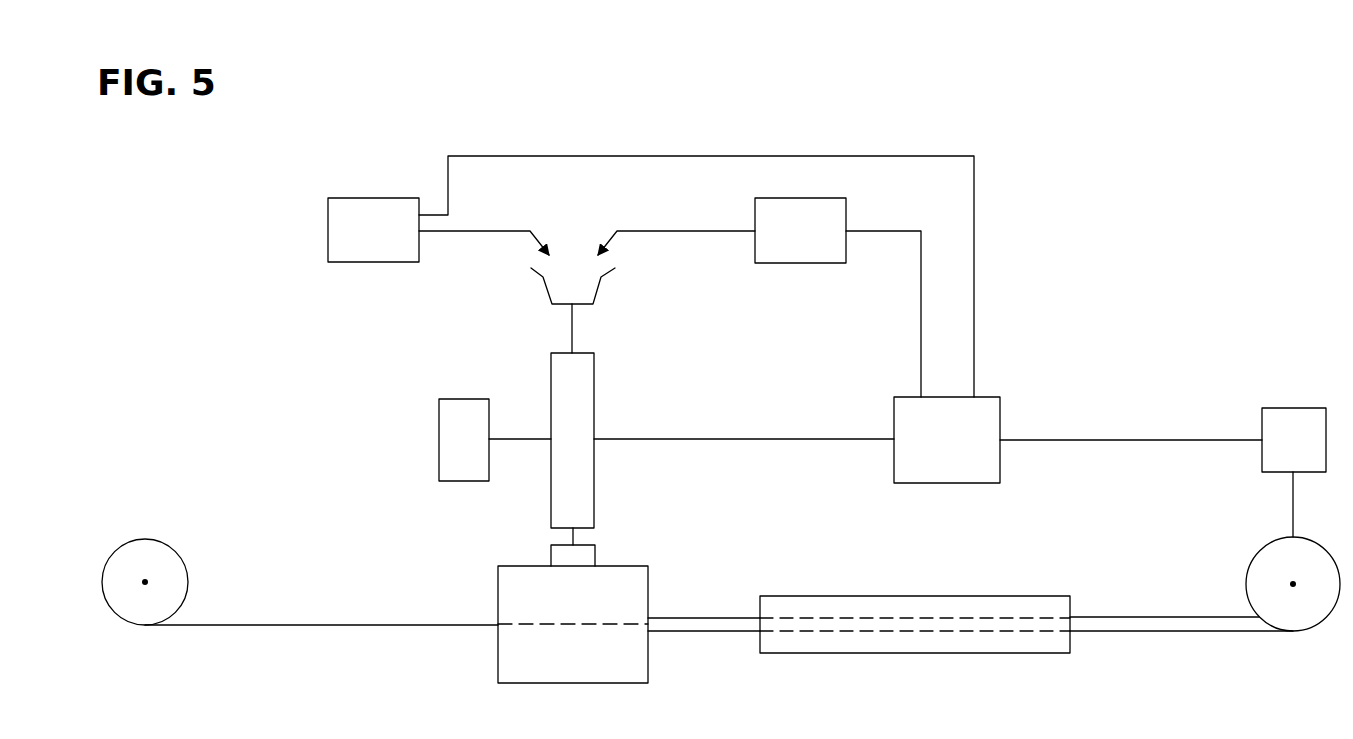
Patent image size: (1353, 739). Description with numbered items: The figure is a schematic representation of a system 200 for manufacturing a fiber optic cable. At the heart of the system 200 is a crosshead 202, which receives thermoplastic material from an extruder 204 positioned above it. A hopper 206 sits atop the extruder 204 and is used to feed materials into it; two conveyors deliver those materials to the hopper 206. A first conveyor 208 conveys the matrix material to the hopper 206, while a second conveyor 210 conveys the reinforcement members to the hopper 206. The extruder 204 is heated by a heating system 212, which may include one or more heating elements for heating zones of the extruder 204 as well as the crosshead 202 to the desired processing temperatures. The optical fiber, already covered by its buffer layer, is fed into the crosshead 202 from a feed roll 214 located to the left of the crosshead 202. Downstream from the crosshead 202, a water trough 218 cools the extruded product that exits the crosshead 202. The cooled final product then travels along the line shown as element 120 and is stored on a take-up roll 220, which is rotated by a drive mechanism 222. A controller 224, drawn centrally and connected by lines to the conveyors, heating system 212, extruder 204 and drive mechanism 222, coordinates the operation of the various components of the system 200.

The system 200 is at (1044, 328).
The second conveyor 210 is at (360, 198).
The first conveyor 208 is at (807, 197).
The hopper 206 is at (599, 282).
The extruder 204 is at (594, 405).
The crosshead 202 is at (630, 565).
The heating system 212 is at (439, 450).
The controller 224 is at (943, 484).
The drive mechanism 222 is at (1293, 408).
The take-up roll 220 is at (1246, 572).
The feed roll 214 is at (140, 537).
The water trough 218 is at (845, 595).
The web substrate 120 is at (1148, 617).